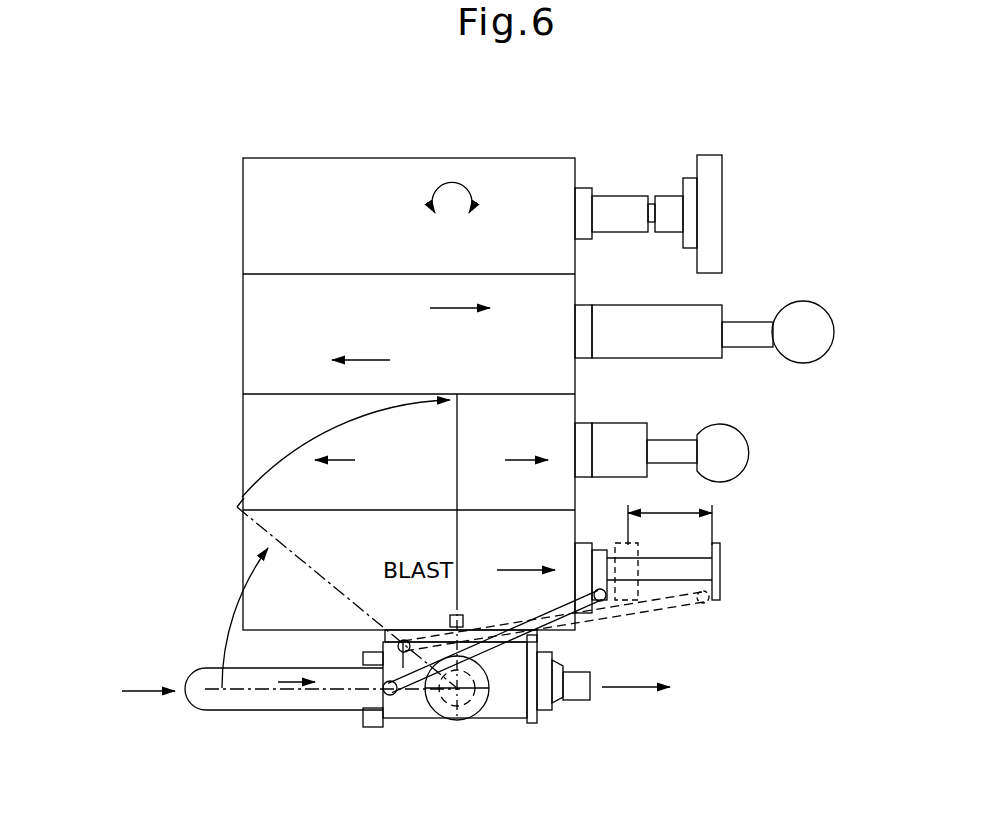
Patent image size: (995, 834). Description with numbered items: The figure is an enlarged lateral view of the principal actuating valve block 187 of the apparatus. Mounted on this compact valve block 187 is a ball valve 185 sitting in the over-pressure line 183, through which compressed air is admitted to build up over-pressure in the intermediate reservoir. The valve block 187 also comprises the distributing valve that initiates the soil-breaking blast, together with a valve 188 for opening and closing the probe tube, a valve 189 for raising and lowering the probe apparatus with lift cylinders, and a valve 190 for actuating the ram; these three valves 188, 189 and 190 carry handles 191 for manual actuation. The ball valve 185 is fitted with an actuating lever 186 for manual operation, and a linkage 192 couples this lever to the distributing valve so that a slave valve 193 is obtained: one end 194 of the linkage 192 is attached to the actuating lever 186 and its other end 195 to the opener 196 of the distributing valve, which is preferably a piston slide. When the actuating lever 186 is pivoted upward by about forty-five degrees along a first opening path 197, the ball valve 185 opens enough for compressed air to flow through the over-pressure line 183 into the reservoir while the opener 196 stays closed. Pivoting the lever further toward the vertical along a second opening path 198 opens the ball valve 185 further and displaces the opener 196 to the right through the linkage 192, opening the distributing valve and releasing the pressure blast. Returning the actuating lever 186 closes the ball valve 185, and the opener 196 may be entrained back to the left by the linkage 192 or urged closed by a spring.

The over-pressure line 183 is at (634, 690).
The ball valve 185 is at (480, 718).
The actuating lever 186 is at (238, 713).
The valve block 187 is at (247, 150).
The valve 188 is at (243, 433).
The valve 189 is at (243, 333).
The valve 190 is at (243, 216).
The handles 191 is at (722, 167).
The linkage 192 is at (568, 632).
The slave valve 193 is at (218, 618).
The end of linkage 194 is at (394, 697).
The other end of linkage 195 is at (608, 604).
The opener 196 is at (720, 552).
The first opening path 197 is at (233, 607).
The second opening path 198 is at (323, 432).